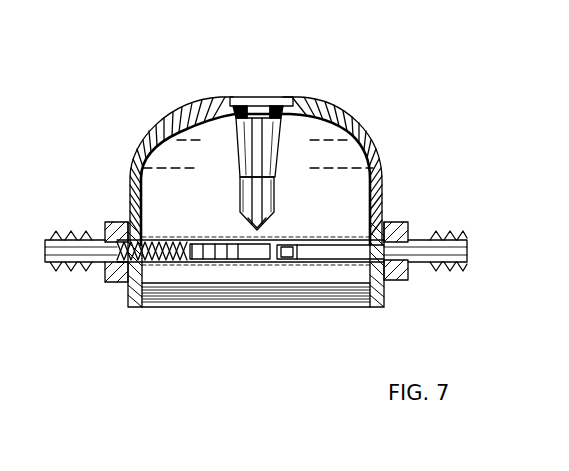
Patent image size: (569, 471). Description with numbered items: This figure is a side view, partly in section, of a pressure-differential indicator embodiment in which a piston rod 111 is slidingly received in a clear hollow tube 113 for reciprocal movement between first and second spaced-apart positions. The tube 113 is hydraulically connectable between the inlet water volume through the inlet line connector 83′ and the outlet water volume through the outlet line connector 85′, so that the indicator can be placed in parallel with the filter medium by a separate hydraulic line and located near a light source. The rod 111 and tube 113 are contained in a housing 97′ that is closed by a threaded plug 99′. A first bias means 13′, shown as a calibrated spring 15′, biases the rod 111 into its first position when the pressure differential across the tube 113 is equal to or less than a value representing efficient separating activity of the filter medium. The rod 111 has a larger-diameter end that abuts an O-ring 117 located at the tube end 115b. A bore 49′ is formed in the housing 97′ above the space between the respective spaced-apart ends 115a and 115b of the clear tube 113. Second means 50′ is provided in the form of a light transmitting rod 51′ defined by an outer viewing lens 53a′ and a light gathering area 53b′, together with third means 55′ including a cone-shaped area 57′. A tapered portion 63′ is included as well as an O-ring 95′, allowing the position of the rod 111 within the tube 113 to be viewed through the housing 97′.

The first bias means 13′ is at (183, 241).
The calibrated spring 15′ is at (150, 298).
The bore 49′ is at (233, 97).
The second means 50′ is at (283, 154).
The light transmitting rod 51′ is at (276, 170).
The outer viewing lens 53a′ is at (252, 95).
The light gathering area 53b′ is at (283, 98).
The third means 55′ is at (279, 226).
The cone-shaped area 57′ is at (252, 222).
The tapered portion 63′ is at (242, 165).
The inlet line connector 83′ is at (470, 258).
The outlet line connector 85′ is at (56, 259).
The O-ring 95′ is at (227, 120).
The housing 97′ is at (156, 123).
The threaded plug 99′ is at (205, 300).
The piston rod 111 is at (345, 268).
The clear hollow tube 113 is at (288, 262).
The tube end 115a is at (398, 266).
The tube end 115b is at (126, 268).
The O-ring 117 is at (112, 225).